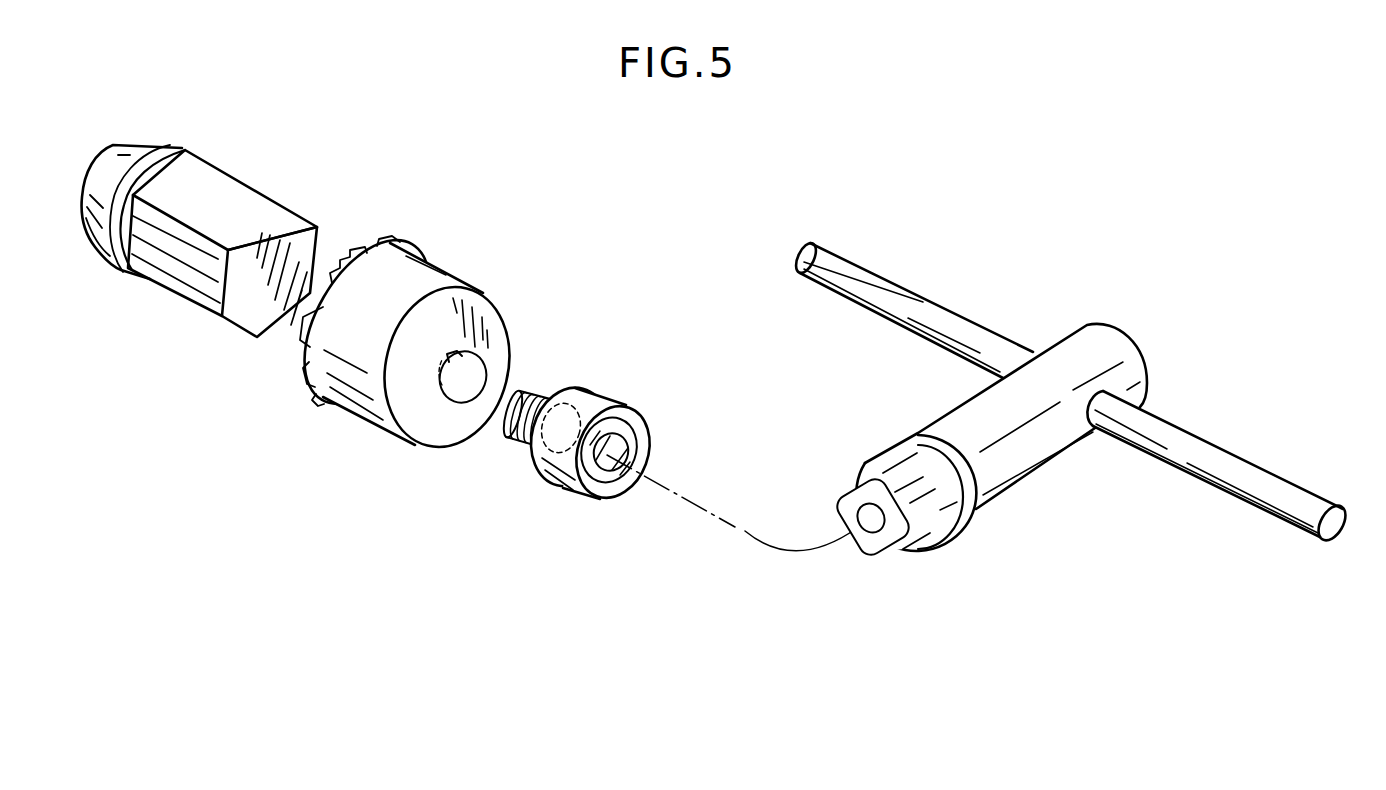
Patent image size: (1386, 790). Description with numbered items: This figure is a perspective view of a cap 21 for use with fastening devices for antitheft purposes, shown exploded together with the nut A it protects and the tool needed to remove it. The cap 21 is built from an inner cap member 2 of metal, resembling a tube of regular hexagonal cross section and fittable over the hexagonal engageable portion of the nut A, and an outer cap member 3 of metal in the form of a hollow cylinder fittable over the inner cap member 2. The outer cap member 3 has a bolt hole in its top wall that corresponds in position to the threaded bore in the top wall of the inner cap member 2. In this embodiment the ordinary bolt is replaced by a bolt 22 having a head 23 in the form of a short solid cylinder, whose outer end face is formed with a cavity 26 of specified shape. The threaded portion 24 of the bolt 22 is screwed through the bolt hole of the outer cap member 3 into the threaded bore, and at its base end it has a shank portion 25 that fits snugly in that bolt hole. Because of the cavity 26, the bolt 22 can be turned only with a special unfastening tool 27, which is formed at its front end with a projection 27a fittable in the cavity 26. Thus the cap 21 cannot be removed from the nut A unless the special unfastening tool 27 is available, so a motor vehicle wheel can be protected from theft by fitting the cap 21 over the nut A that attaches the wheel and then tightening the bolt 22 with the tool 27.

The nut A is at (223, 198).
The inner cap member 2 is at (353, 253).
The outer cap member 3 is at (402, 312).
The cap 21 is at (567, 262).
The bolt 22 is at (625, 449).
The head 23 is at (577, 484).
The threaded portion 24 is at (515, 430).
The shank portion 25 is at (574, 412).
The cavity 26 is at (624, 448).
The special unfastening tool 27 is at (1071, 440).
The projection 27a is at (883, 557).